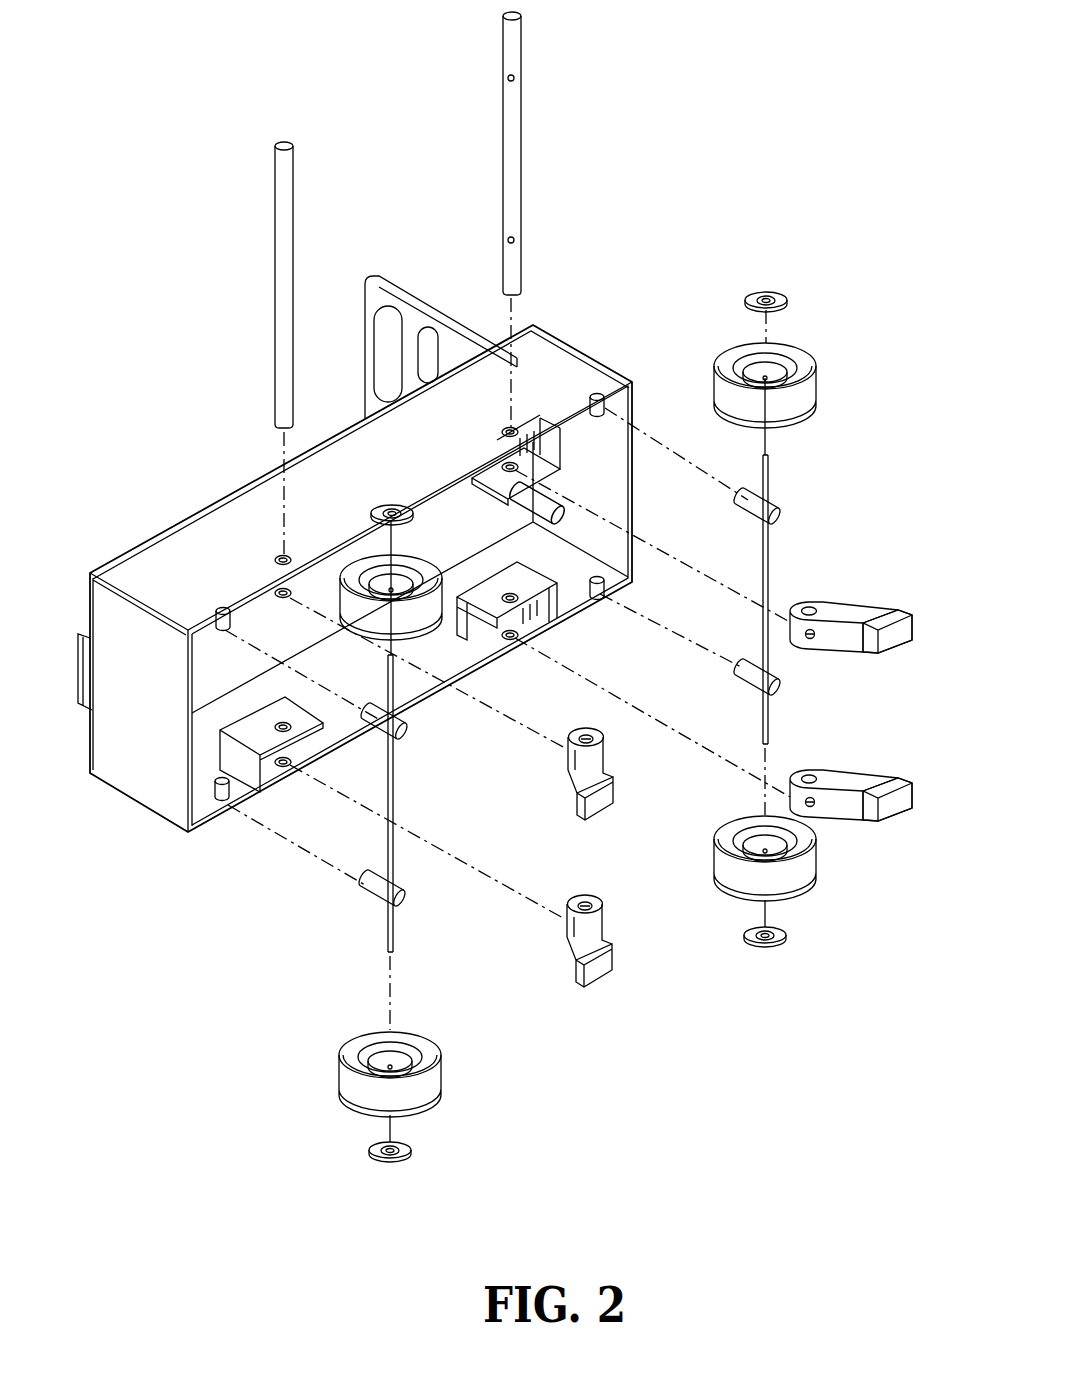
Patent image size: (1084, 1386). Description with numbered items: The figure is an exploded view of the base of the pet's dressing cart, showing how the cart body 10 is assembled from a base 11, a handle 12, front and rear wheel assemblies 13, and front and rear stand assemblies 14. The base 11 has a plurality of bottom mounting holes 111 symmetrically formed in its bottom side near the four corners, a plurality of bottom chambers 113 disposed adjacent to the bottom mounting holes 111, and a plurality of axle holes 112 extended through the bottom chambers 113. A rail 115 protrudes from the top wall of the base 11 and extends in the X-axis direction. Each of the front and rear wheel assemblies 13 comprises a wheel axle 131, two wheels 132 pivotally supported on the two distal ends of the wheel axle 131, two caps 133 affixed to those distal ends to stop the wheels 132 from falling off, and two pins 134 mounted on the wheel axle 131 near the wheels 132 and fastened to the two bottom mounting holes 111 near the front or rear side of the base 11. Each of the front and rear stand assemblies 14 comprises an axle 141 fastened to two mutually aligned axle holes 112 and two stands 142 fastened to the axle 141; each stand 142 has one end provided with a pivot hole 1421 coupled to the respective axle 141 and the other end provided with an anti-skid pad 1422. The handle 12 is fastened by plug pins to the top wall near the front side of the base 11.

The cart body 10 is at (733, 100).
The base 11 is at (568, 344).
The bottom mounting holes 111 is at (604, 396).
The axle holes 112 is at (502, 467).
The bottom chambers 113 is at (540, 438).
The rail 115 is at (84, 633).
The handle 12 is at (405, 272).
The front and rear wheel assemblies 13 is at (806, 490).
The wheel axle 131 is at (762, 545).
The wheels 132 is at (422, 567).
The caps 133 is at (388, 505).
The pins 134 is at (745, 497).
The front and rear stand assemblies 14 is at (895, 574).
The axle 141 is at (293, 216).
The stands 142 is at (838, 637).
The pivot hole 1421 is at (808, 602).
The anti-skid pad 1422 is at (890, 642).